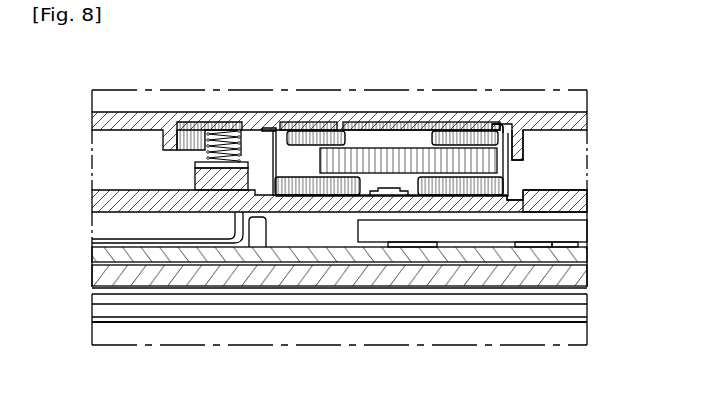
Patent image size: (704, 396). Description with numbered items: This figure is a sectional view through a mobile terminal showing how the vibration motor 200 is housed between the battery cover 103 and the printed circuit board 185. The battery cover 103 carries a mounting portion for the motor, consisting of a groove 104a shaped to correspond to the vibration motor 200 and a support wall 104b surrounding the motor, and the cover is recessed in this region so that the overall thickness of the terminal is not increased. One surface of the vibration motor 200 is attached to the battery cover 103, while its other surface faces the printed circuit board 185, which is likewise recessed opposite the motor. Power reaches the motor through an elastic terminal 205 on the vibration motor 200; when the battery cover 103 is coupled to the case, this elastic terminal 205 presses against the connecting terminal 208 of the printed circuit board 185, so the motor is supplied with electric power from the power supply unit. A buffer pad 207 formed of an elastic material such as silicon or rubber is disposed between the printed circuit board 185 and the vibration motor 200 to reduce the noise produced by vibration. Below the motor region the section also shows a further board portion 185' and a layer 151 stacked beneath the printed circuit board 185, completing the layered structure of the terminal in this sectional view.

The battery cover 103 is at (150, 118).
The elastic terminal 205 is at (240, 139).
The vibration motor 200 is at (384, 122).
The groove 104a is at (497, 126).
The support wall 104b is at (520, 145).
The connecting terminal 208 is at (220, 180).
The printed circuit board 185 is at (313, 218).
The buffer pad 207 is at (507, 197).
The frame portion 185' is at (581, 208).
The display unit 151 is at (563, 276).